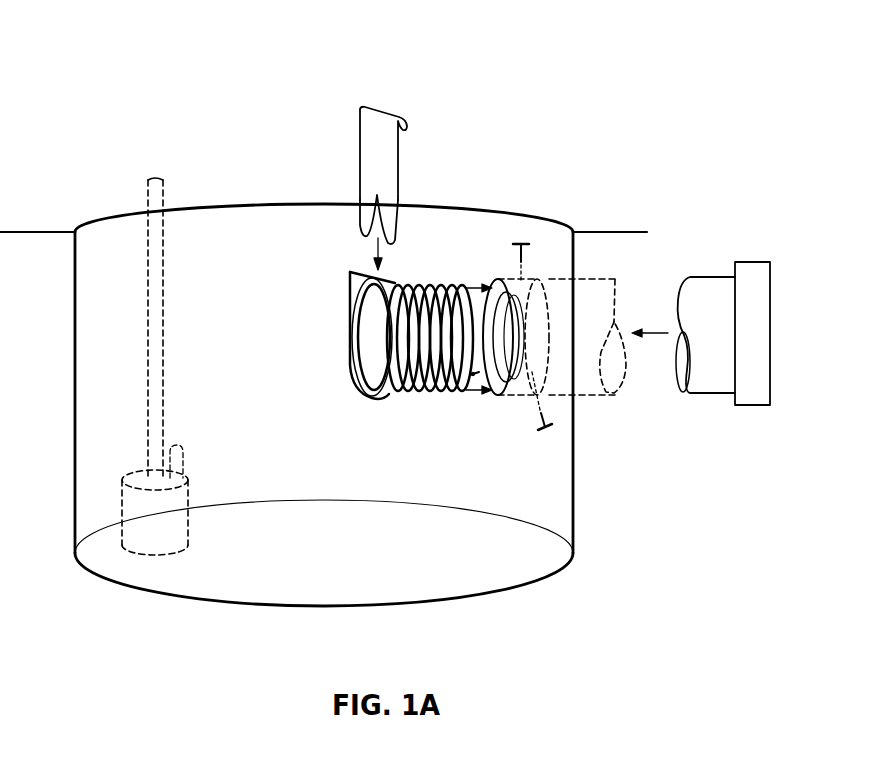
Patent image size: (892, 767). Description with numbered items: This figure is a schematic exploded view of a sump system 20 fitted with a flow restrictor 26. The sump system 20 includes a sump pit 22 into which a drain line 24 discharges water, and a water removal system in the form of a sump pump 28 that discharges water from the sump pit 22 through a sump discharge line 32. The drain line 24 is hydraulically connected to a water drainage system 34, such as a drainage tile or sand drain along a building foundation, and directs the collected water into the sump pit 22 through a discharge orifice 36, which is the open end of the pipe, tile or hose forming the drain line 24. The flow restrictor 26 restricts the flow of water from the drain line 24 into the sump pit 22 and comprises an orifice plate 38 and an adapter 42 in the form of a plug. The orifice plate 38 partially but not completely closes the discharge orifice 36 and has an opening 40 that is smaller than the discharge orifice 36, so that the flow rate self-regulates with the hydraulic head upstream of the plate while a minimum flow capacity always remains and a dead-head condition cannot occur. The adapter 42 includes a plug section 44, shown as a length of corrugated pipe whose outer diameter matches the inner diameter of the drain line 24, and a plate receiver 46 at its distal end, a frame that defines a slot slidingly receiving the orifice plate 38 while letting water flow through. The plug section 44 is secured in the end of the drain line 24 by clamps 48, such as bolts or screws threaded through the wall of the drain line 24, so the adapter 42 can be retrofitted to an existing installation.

The sump system 20 is at (323, 312).
The sump pit 22 is at (347, 564).
The drain line 24 is at (554, 318).
The flow restrictor 26 is at (491, 154).
The sump pump 28 is at (122, 498).
The sump discharge line 32 is at (147, 194).
The water drainage system 34 is at (755, 262).
The discharge orifice 36 is at (524, 347).
The orifice plate 38 is at (375, 160).
The opening 40 is at (370, 238).
The adapter 42 is at (390, 341).
The plug section 44 is at (423, 281).
The plate receiver 46 is at (353, 300).
The clamps 48 is at (523, 242).